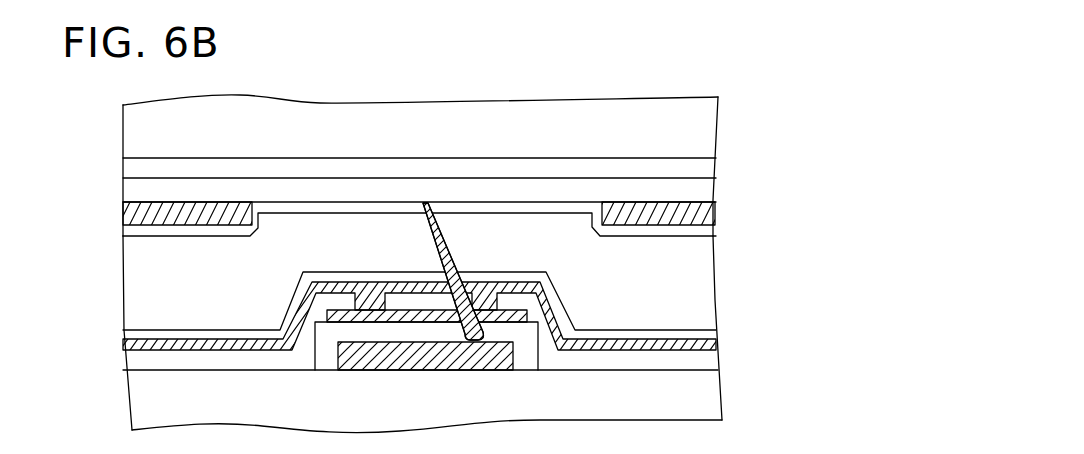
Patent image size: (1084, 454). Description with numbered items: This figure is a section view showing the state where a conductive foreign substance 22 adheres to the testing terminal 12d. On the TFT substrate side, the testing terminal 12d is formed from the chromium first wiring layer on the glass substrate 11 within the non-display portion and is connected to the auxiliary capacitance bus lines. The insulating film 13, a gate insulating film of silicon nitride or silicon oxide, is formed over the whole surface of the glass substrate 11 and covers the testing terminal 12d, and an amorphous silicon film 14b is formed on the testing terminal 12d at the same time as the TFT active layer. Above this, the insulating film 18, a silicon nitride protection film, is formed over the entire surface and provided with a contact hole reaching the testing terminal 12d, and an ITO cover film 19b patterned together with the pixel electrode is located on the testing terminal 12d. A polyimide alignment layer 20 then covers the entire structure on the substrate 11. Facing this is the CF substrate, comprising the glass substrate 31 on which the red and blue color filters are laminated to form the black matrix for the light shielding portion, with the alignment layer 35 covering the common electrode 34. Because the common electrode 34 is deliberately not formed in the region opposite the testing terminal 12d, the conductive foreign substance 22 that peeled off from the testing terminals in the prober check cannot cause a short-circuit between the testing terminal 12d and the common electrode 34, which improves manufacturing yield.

The glass substrate 11 is at (722, 398).
The testing terminal 12d is at (443, 372).
The insulating film 13 is at (528, 372).
The amorphous silicon film 14b is at (402, 311).
The insulating film 18 is at (722, 360).
The cover film 19b is at (548, 300).
The alignment layer 20 is at (670, 332).
The conductive foreign substance 22 is at (445, 242).
The glass substrate 31 is at (712, 114).
The common electrode 34 is at (181, 215).
The alignment layer 35 is at (315, 213).